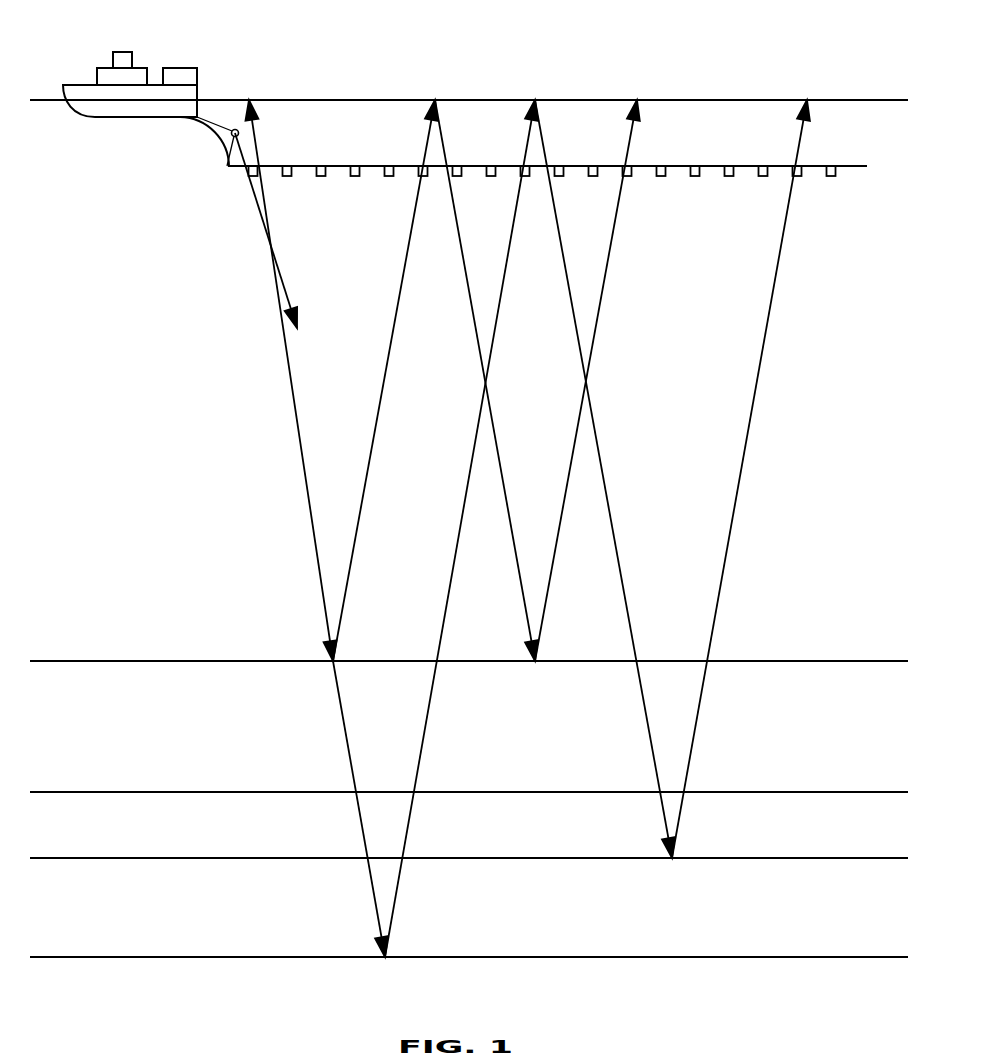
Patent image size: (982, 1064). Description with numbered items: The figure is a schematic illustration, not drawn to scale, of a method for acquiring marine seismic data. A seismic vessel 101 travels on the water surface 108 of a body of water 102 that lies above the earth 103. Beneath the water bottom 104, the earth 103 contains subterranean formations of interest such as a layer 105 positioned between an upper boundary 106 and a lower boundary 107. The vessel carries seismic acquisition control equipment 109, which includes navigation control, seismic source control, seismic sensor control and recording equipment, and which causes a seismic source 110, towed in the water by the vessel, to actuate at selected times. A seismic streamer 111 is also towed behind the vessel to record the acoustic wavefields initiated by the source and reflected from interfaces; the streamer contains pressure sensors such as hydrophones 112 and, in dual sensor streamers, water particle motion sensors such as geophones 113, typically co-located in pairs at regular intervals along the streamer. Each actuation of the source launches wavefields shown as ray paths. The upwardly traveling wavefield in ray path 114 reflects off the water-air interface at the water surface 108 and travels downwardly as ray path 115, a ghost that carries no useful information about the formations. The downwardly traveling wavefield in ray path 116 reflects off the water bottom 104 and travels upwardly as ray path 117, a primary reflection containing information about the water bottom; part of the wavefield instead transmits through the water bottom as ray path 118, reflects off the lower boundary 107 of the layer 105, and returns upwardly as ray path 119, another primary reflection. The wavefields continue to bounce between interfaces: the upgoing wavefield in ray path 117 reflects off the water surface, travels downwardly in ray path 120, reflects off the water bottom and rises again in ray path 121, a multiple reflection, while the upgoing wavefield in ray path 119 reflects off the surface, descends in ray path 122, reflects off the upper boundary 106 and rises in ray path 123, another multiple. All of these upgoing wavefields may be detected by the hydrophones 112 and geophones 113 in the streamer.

The seismic vessel 101 is at (130, 71).
The body of water 102 is at (148, 406).
The earth 103 is at (174, 735).
The water bottom 104 is at (469, 639).
The layer 105 is at (564, 917).
The upper boundary 106 is at (469, 844).
The lower boundary 107 is at (469, 943).
The water surface 108 is at (469, 82).
The seismic acquisition control equipment 109 is at (209, 62).
The seismic source 110 is at (199, 150).
The seismic streamer 111 is at (548, 144).
The hydrophones 112 is at (590, 140).
The geophones 113 is at (572, 157).
The ray path 114 is at (183, 141).
The ray path 115 is at (304, 230).
The ray path 116 is at (274, 380).
The ray path 117 is at (385, 380).
The ray path 118 is at (331, 809).
The ray path 119 is at (461, 528).
The ray path 120 is at (486, 380).
The ray path 121 is at (587, 380).
The ray path 122 is at (605, 479).
The ray path 123 is at (741, 479).